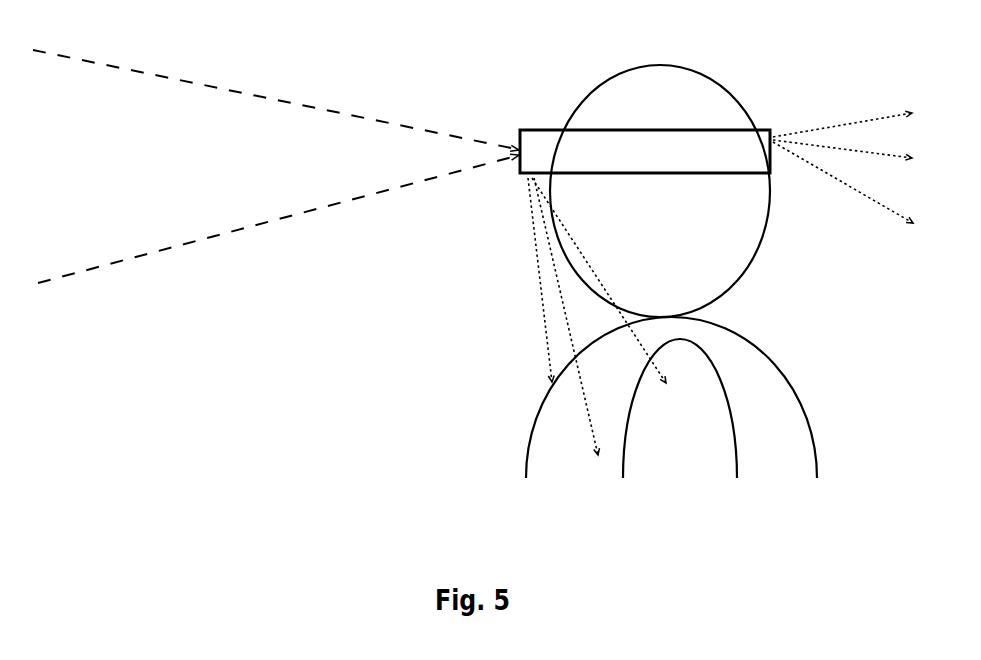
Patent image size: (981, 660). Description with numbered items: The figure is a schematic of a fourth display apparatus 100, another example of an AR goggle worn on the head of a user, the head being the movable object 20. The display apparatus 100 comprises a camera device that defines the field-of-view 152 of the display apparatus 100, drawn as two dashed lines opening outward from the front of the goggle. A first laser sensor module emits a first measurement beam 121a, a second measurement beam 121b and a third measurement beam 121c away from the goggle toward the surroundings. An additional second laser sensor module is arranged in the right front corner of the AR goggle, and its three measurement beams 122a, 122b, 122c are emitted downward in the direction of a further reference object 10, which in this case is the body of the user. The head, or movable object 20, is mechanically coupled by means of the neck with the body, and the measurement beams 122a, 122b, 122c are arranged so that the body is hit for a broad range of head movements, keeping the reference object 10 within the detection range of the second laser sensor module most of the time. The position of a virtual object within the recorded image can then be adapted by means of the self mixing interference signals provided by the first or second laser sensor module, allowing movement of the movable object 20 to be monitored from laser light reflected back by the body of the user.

The reference object 10 is at (527, 448).
The movable object 20 is at (680, 88).
The display apparatus 100 is at (528, 128).
The field-of-view 152 is at (187, 243).
The first measurement beam of first laser sensor module 121a is at (830, 126).
The second measurement beam of first laser sensor module 121b is at (850, 153).
The third measurement beam of first laser sensor module 121c is at (890, 212).
The first measurement beam of second laser sensor module 122a is at (542, 300).
The second measurement beam of second laser sensor module 122b is at (638, 339).
The third measurement beam of second laser sensor module 122c is at (594, 430).